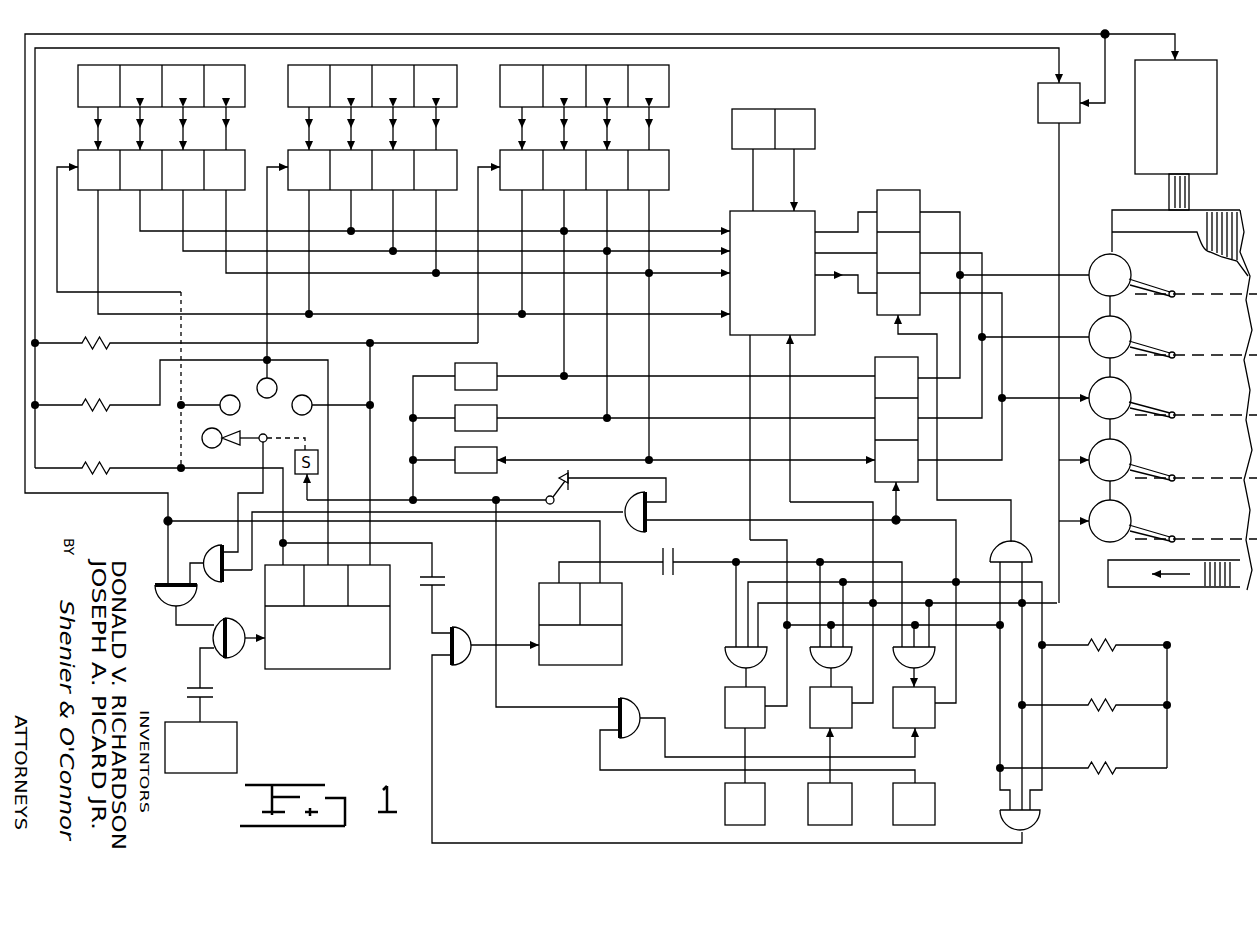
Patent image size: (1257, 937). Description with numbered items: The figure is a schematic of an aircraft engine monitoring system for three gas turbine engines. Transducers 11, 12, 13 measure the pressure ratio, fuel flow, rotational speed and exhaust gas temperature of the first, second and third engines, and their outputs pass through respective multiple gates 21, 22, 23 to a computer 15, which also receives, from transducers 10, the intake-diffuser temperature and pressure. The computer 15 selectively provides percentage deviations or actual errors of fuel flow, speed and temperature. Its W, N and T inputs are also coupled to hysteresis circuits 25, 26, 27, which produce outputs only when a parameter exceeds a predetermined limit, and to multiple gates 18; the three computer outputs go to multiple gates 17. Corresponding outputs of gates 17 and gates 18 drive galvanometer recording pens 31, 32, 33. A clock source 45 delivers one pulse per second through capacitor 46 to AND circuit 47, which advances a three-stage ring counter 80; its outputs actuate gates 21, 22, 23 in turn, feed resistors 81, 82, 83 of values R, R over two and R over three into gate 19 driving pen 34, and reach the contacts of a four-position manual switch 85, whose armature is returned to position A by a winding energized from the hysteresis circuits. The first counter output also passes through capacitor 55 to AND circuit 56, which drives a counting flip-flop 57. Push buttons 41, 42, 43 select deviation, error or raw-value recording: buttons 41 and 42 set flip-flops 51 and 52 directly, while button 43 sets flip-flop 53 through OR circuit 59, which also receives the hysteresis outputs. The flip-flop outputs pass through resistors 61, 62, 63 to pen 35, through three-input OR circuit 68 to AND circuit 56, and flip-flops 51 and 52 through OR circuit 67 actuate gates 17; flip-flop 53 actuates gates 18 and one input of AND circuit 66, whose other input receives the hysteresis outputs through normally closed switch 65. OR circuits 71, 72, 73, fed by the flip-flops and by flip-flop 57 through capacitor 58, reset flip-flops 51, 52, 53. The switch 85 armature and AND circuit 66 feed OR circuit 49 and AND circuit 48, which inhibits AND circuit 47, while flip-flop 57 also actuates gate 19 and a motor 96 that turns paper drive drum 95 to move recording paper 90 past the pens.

The transducers 10 is at (817, 109).
The transducers for engine number 1 11 is at (78, 85).
The transducers for engine number 2 12 is at (288, 85).
The transducers for engine number 3 13 is at (500, 85).
The computer 15 is at (816, 212).
The multiple gates 17 is at (922, 190).
The multiple gates 18 is at (872, 357).
The gate 19 is at (1040, 122).
The multiple gates 21 is at (78, 150).
The multiple gates 22 is at (288, 150).
The multiple gates 23 is at (500, 152).
The hysteresis circuit 25 is at (497, 366).
The hysteresis circuit 26 is at (497, 408).
The hysteresis circuit 27 is at (497, 450).
The galvanometer driven recording pen 31 is at (1090, 266).
The galvanometer driven recording pen 32 is at (1090, 328).
The galvanometer driven recording pen 33 is at (1090, 389).
The galvanometer driven recording pen 34 is at (1090, 451).
The galvanometer driven recording pen 35 is at (1090, 512).
The push button switch 41 is at (725, 820).
The push button switch 42 is at (808, 820).
The push button switch 43 is at (893, 820).
The clock source 45 is at (237, 750).
The capacitor 46 is at (213, 697).
The AND circuit 47 is at (240, 660).
The AND circuit 48 is at (160, 608).
The OR circuit 49 is at (213, 545).
The flip-flop 51 is at (725, 723).
The flip-flop 52 is at (810, 723).
The flip-flop 53 is at (893, 723).
The capacitor 55 is at (445, 584).
The AND circuit 56 is at (455, 668).
The counting flip-flop 57 is at (572, 666).
The capacitor 58 is at (668, 575).
The OR circuit 59 is at (643, 700).
The resistor 61 is at (1114, 765).
The resistor 62 is at (1114, 702).
The resistor 63 is at (1114, 642).
The manually operable switch 65 is at (556, 488).
The AND circuit 66 is at (632, 532).
The OR circuit 67 is at (1030, 545).
The OR circuit 68 is at (1042, 823).
The OR circuit 71 is at (725, 650).
The OR circuit 72 is at (810, 652).
The OR circuit 73 is at (893, 652).
The three-stage ring counter 80 is at (330, 669).
The resistor 81 is at (106, 468).
The resistor 82 is at (106, 405).
The resistor 83 is at (106, 343).
The manually-operable switch 85 is at (275, 409).
The recording paper 90 is at (1248, 584).
The paper drive drum 95 is at (1240, 213).
The motor 96 is at (1134, 172).